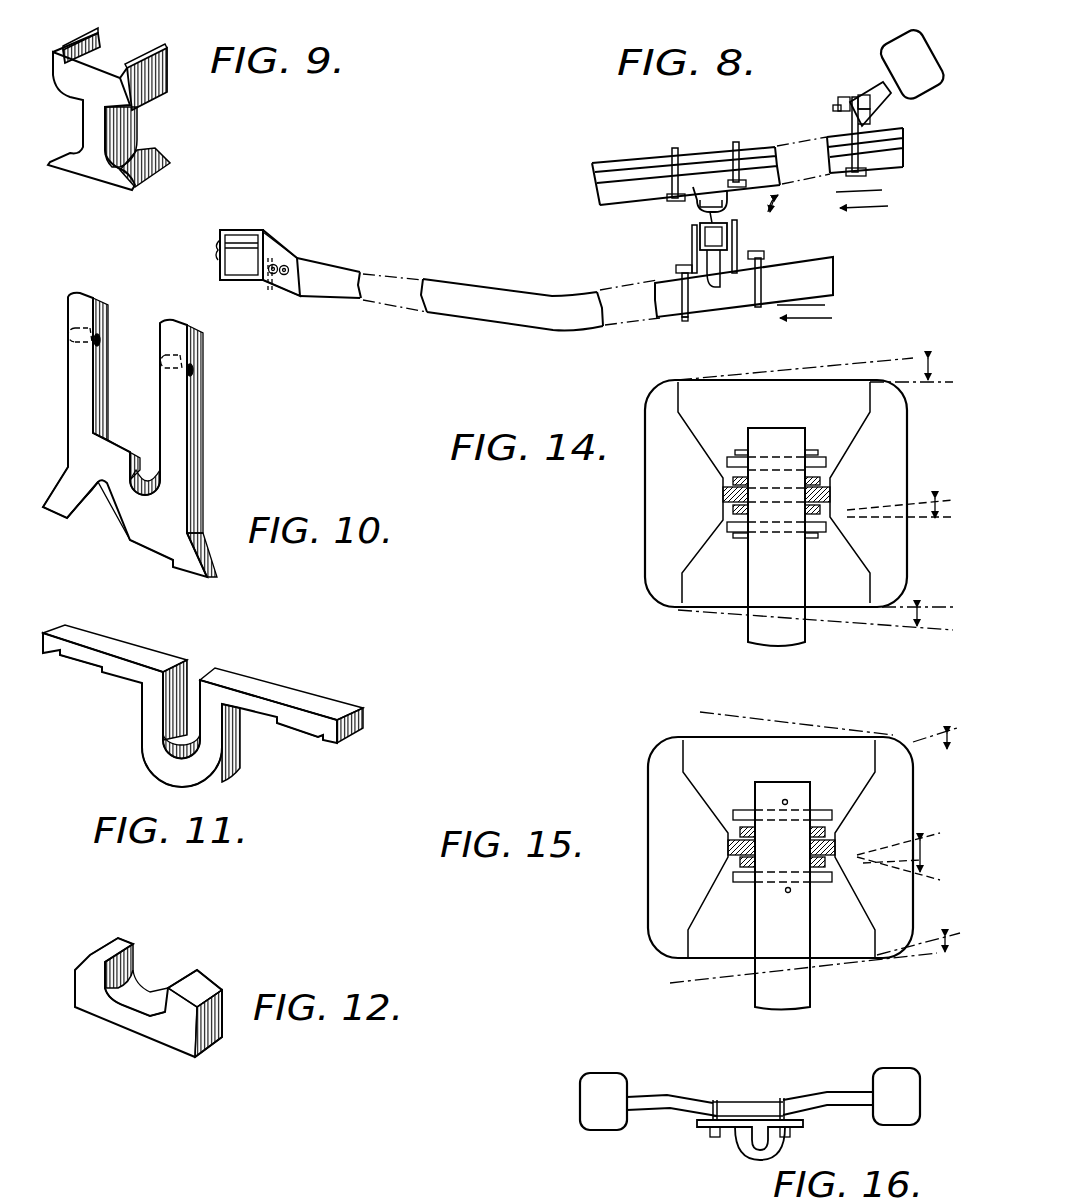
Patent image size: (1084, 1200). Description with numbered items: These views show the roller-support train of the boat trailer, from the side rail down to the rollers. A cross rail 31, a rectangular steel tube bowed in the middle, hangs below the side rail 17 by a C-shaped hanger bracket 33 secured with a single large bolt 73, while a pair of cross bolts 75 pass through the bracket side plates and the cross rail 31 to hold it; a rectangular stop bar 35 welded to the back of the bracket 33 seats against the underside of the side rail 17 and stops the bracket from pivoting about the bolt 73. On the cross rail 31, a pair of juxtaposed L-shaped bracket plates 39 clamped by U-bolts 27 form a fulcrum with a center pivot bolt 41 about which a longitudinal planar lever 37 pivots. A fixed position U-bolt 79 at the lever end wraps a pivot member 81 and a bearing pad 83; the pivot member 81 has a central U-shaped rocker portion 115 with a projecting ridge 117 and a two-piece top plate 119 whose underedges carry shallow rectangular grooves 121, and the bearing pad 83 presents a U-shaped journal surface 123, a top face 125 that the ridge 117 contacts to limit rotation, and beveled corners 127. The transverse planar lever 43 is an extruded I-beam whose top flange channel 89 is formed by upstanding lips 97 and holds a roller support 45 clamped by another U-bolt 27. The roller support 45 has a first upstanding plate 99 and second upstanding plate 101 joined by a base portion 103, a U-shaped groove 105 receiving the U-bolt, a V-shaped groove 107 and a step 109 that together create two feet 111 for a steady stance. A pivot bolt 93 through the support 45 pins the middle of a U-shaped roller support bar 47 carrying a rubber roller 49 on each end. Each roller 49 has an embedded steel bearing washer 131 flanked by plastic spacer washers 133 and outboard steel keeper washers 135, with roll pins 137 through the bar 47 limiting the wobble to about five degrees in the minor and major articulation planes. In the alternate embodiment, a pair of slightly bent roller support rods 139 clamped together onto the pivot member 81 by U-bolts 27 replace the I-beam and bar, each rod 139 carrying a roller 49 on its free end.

In FIG. 8, the side rail 17 is at (245, 232).
In FIG. 8, the U-bolt 27 is at (672, 150).
In FIG. 8, the cross rail 31 is at (450, 298).
In FIG. 8, the hanger bracket 33 is at (270, 248).
In FIG. 8, the stop bar 35 is at (246, 290).
In FIG. 8, the longitudinal planar lever 37 is at (692, 235).
In FIG. 8, the L-shaped bracket plate 39 is at (737, 242).
In FIG. 8, the pivot bolt 41 is at (737, 232).
In FIG. 9, the transverse planar lever 43 is at (105, 95).
In FIG. 8, the transverse planar lever 43 is at (612, 182).
In FIG. 8, the roller support 45 is at (840, 118).
In FIG. 10, the roller support 45 is at (214, 450).
In FIG. 8, the U-shaped roller support bar 47 is at (880, 95).
In FIG. 14, the U-shaped roller support bar 47 is at (775, 428).
In FIG. 15, the U-shaped roller support bar 47 is at (785, 800).
In FIG. 8, the roller 49 is at (925, 60).
In FIG. 14, the roller 49 is at (885, 438).
In FIG. 15, the roller 49 is at (890, 801).
In FIG. 16, the roller 49 is at (590, 1107).
In FIG. 8, the large bolt 73 is at (216, 240).
In FIG. 8, the cross bolt 75 is at (286, 266).
In FIG. 8, the fixed position U-bolt 79 is at (712, 262).
In FIG. 8, the pivot member 81 is at (694, 185).
In FIG. 11, the pivot member 81 is at (196, 670).
In FIG. 16, the pivot member 81 is at (745, 1155).
In FIG. 8, the bearing pad 83 is at (700, 210).
In FIG. 12, the bearing pad 83 is at (163, 958).
In FIG. 9, the top flange channel 89 is at (110, 63).
In FIG. 8, the pivot bolt 93 is at (838, 103).
In FIG. 9, the upstanding lip 97 is at (68, 52).
In FIG. 10, the first upstanding plate 99 is at (185, 350).
In FIG. 10, the second upstanding plate 101 is at (80, 317).
In FIG. 10, the base portion 103 is at (163, 520).
In FIG. 10, the U-shaped groove 105 is at (145, 475).
In FIG. 10, the V-shaped groove 107 is at (105, 510).
In FIG. 10, the step 109 is at (142, 550).
In FIG. 10, the feet 111 is at (62, 507).
In FIG. 11, the U-shaped rocker portion 115 is at (200, 780).
In FIG. 11, the projecting ridge 117 is at (142, 722).
In FIG. 11, the top plate 119 is at (132, 672).
In FIG. 11, the shallow rectangular groove 121 is at (92, 660).
In FIG. 12, the U-shaped journal surface 123 is at (155, 987).
In FIG. 12, the top face 125 is at (112, 945).
In FIG. 12, the beveled corner 127 is at (197, 997).
In FIG. 14, the steel bearing washer 131 is at (723, 495).
In FIG. 15, the steel bearing washer 131 is at (728, 847).
In FIG. 14, the plastic spacer washer 133 is at (733, 481).
In FIG. 15, the plastic spacer washer 133 is at (740, 830).
In FIG. 14, the steel keeper washer 135 is at (727, 462).
In FIG. 15, the steel keeper washer 135 is at (733, 813).
In FIG. 14, the roll pin 137 is at (820, 450).
In FIG. 15, the roll pin 137 is at (790, 892).
In FIG. 16, the roller support rod 139 is at (645, 1100).